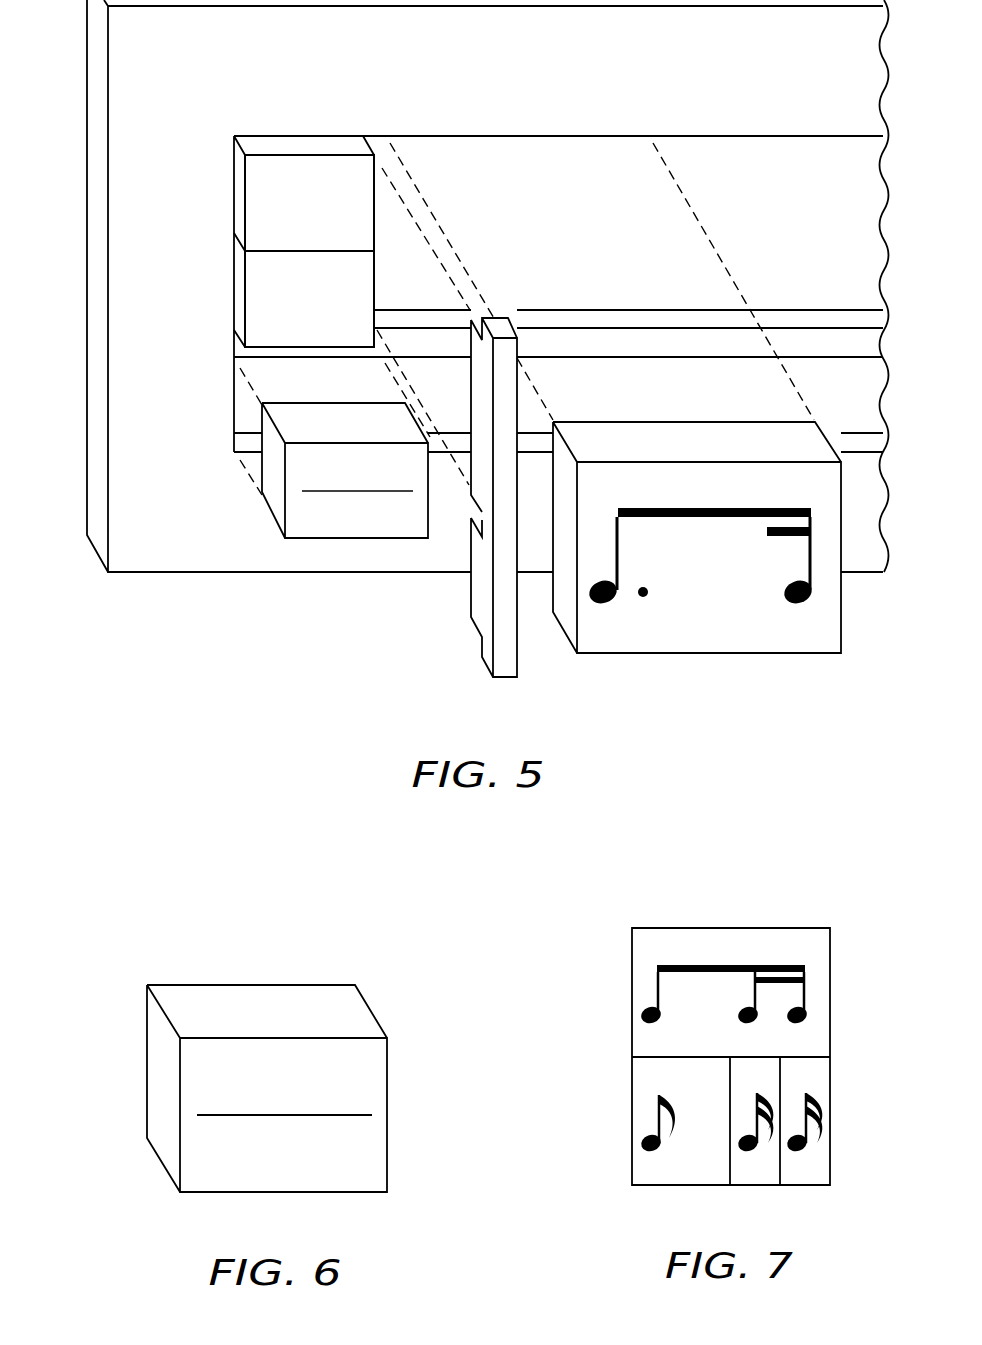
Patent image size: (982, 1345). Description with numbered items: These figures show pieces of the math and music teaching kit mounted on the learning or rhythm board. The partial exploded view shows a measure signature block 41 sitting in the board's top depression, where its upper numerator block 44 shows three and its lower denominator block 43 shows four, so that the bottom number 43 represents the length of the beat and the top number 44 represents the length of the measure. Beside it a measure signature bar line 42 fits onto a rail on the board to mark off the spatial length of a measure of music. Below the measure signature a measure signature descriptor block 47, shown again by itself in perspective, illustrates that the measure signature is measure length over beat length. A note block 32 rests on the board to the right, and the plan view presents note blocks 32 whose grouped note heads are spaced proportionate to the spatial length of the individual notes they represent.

In FIG. 5, the note block 32 is at (697, 638).
In FIG. 7, the note block 32 is at (745, 923).
In FIG. 5, the measure signature block 41 is at (217, 197).
In FIG. 5, the measure signature bar line 42 is at (506, 395).
In FIG. 5, the denominator block 43 is at (255, 285).
In FIG. 5, the numerator block 44 is at (283, 162).
In FIG. 5, the measure signature descriptor block 47 is at (343, 528).
In FIG. 6, the measure signature descriptor block 47 is at (270, 1000).